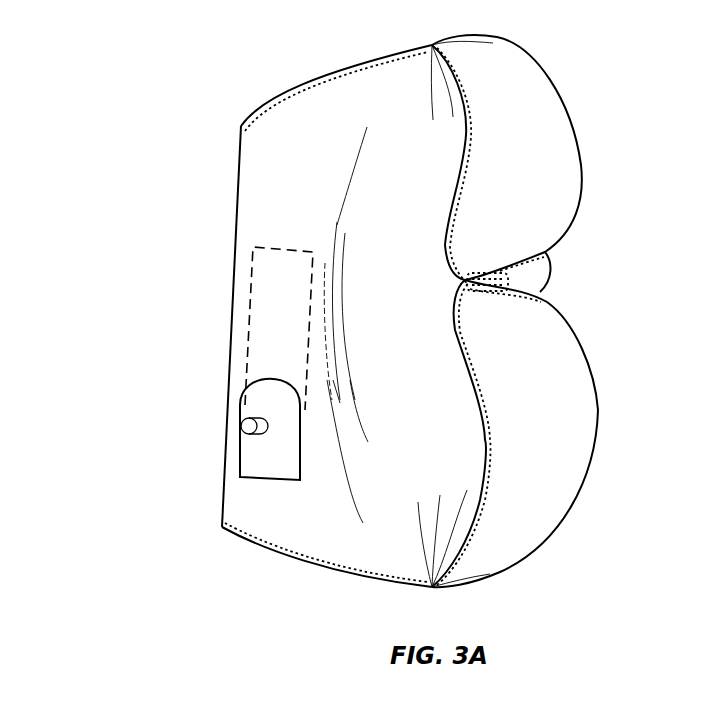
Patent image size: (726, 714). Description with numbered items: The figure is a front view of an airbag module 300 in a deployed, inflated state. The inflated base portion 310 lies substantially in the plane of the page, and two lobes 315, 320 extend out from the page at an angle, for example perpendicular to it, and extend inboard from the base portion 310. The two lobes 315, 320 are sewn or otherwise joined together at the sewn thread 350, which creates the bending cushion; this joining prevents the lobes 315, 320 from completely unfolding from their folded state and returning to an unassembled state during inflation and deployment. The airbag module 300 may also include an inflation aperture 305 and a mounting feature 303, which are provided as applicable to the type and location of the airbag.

The airbag module 300 is at (124, 68).
The mounting feature 303 is at (242, 452).
The inflation aperture 305 is at (240, 282).
The base portion 310 is at (412, 299).
The lobe 315 is at (580, 178).
The lobe 320 is at (593, 417).
The sewn thread 350 is at (548, 300).